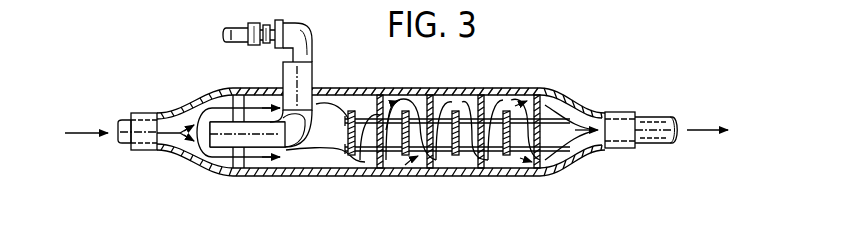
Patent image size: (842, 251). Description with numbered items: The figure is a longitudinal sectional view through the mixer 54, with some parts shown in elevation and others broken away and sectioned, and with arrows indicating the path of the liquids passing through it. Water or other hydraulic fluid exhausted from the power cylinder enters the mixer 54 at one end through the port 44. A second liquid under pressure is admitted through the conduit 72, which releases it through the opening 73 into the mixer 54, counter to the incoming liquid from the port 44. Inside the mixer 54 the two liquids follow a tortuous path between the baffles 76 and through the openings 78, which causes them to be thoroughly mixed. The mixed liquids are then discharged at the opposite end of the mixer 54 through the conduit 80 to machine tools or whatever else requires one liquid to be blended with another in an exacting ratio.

The port 44 is at (124, 144).
The mixer 54 is at (562, 84).
The conduit 72 is at (305, 78).
The opening 73 is at (302, 137).
The baffles 76 is at (424, 112).
The openings 78 is at (500, 117).
The conduit 80 is at (658, 123).